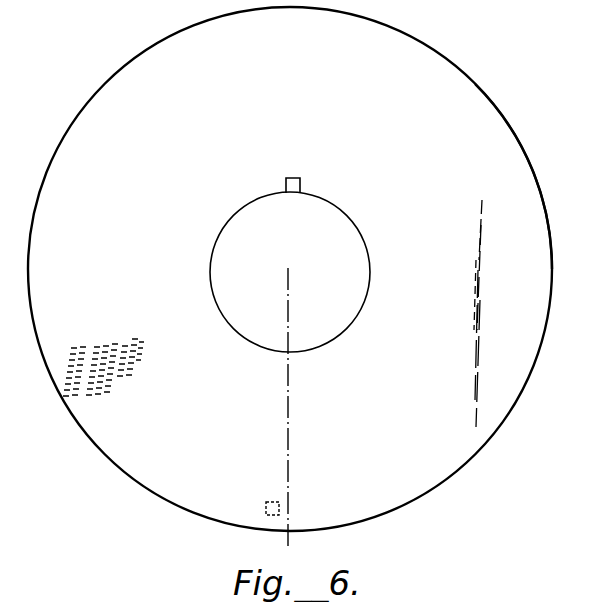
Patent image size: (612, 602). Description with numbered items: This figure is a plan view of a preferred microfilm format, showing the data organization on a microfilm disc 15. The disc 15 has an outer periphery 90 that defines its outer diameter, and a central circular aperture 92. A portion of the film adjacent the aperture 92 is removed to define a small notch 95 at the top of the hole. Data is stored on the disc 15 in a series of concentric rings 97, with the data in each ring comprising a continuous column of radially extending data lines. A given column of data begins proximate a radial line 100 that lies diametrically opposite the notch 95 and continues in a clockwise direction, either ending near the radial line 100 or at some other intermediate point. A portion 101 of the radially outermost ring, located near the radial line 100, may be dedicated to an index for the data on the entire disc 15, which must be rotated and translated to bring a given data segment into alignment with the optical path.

The microfilm disc 15 is at (410, 24).
The outer periphery 90 is at (496, 104).
The central circular aperture 92 is at (274, 254).
The notch 95 is at (301, 186).
The concentric rings 97 is at (125, 376).
The radial line 100 is at (289, 392).
The portion of the radially outermost ring 101 is at (265, 504).